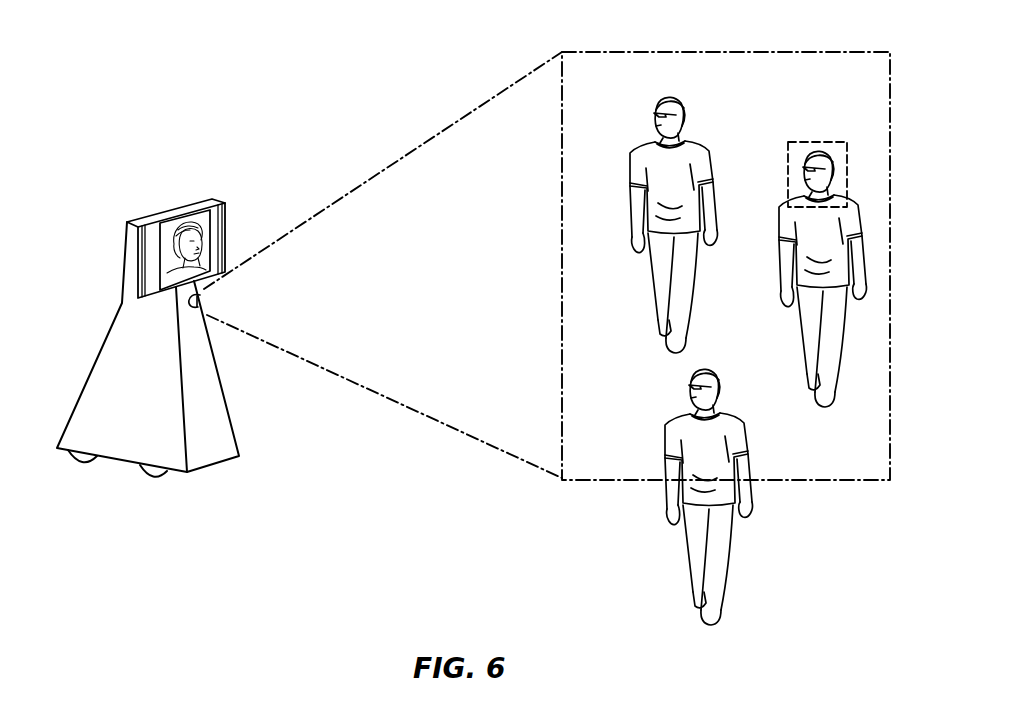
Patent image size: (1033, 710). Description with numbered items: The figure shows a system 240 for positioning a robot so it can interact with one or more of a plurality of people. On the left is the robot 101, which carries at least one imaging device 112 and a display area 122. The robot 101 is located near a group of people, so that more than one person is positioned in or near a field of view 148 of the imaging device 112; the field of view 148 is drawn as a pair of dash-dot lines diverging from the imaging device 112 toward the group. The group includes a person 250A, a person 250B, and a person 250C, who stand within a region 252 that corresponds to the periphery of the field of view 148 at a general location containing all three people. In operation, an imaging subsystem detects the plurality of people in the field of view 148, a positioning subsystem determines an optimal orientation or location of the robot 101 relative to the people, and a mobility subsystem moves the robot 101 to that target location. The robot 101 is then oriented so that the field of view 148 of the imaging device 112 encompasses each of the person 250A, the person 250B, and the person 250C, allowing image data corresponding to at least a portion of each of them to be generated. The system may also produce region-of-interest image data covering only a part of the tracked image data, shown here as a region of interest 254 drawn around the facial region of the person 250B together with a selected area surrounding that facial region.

The system 240 is at (92, 74).
The robot 101 is at (110, 327).
The display area 122 is at (227, 213).
The imaging device 112 is at (202, 303).
The field of view 148 is at (443, 132).
The region 252 is at (698, 52).
The region of interest 254 is at (838, 142).
The person 250A is at (695, 140).
The person 250B is at (858, 245).
The person 250C is at (727, 542).